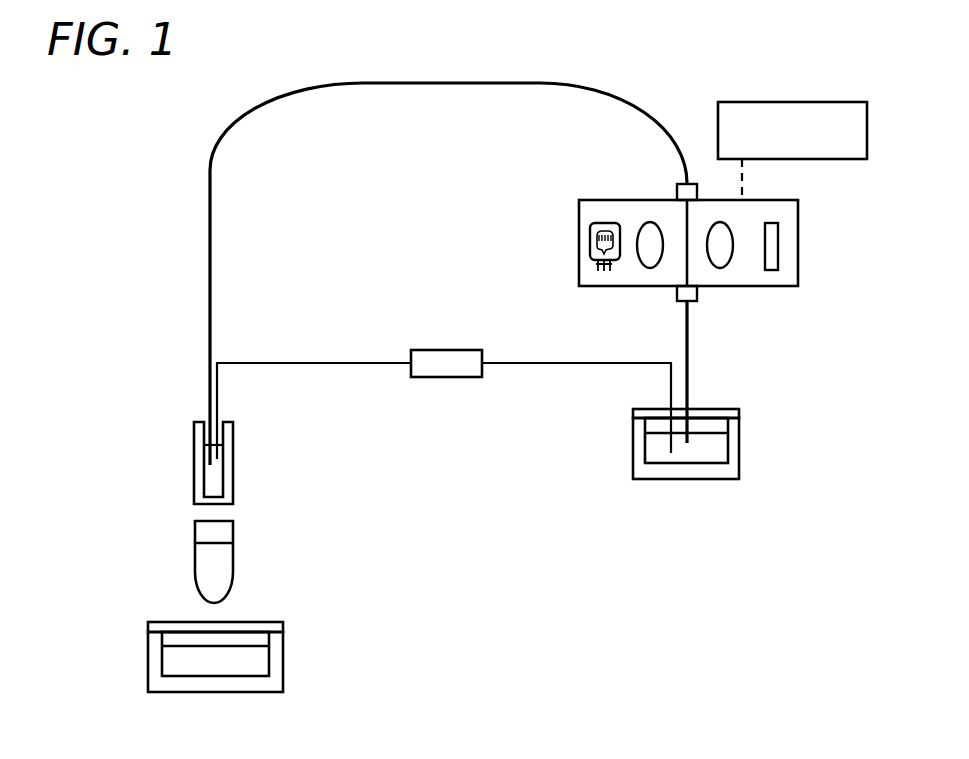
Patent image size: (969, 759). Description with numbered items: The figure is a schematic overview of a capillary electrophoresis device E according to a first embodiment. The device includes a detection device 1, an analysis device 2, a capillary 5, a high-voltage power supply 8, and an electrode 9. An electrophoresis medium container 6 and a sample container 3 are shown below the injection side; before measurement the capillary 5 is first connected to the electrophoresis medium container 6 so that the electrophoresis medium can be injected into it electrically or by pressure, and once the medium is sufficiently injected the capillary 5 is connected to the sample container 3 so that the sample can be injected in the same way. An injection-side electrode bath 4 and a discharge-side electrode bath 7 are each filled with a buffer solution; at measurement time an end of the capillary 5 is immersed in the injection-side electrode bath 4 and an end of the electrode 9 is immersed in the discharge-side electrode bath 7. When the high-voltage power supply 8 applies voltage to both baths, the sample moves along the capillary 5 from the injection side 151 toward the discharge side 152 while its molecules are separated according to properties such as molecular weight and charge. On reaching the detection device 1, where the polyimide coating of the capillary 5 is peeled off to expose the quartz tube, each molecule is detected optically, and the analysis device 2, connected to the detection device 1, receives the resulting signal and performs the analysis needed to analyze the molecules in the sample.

The capillary electrophoresis device E is at (680, 84).
The detection device 1 is at (578, 243).
The analysis device 2 is at (782, 102).
The sample container 3 is at (195, 550).
The injection-side electrode bath 4 is at (195, 463).
The capillary 5 is at (210, 197).
The electrophoresis medium container 6 is at (148, 662).
The discharge-side electrode bath 7 is at (739, 454).
The high-voltage power supply 8 is at (437, 350).
The electrode 9 is at (325, 362).
The injection side 151 is at (167, 406).
The discharge side 152 is at (721, 393).